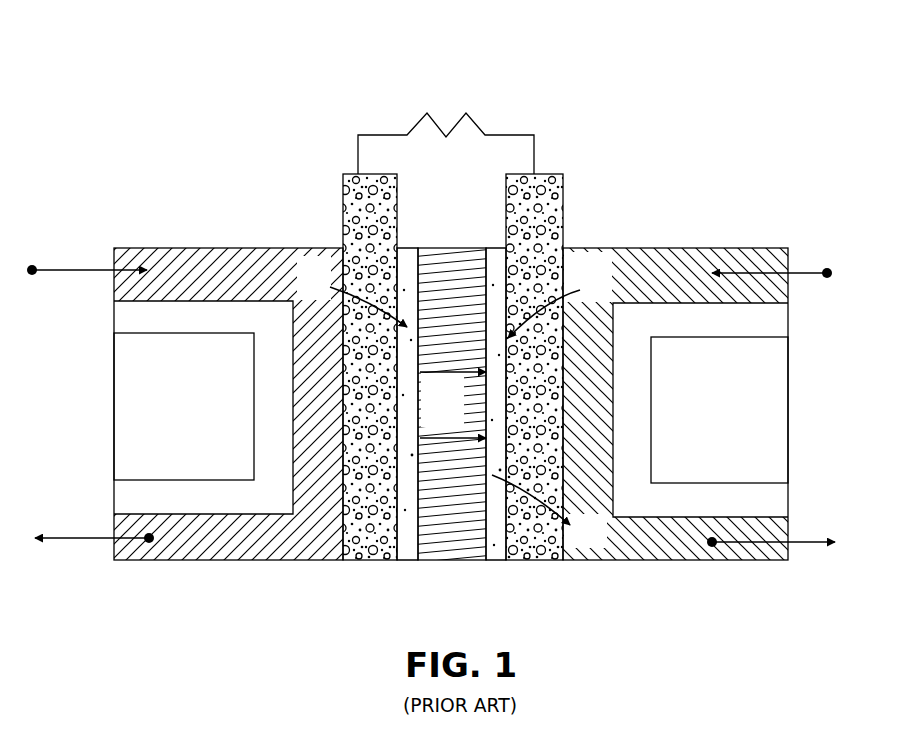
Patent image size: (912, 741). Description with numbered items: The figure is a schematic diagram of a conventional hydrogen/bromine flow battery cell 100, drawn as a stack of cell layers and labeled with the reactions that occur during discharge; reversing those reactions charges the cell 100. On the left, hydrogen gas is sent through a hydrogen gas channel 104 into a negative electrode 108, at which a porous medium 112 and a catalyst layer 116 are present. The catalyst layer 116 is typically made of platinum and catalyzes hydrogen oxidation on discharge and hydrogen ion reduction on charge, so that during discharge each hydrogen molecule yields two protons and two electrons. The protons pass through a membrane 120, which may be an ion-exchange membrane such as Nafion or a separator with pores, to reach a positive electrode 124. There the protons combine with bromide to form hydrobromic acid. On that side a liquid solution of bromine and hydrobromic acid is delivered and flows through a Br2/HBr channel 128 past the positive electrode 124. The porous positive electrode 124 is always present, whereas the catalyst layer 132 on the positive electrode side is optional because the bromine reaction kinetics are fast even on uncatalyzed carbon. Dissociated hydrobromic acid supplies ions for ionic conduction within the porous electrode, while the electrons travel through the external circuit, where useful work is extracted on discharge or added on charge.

The flow battery cell 100 is at (798, 138).
The hydrogen gas channel 104 is at (255, 268).
The negative electrode 108 is at (342, 130).
The porous medium 112 is at (343, 210).
The catalyst layer 116 is at (408, 250).
The membrane 120 is at (438, 543).
The positive electrode 124 is at (558, 157).
The Br2/HBr channel 128 is at (650, 280).
The catalyst layer 132 is at (495, 547).